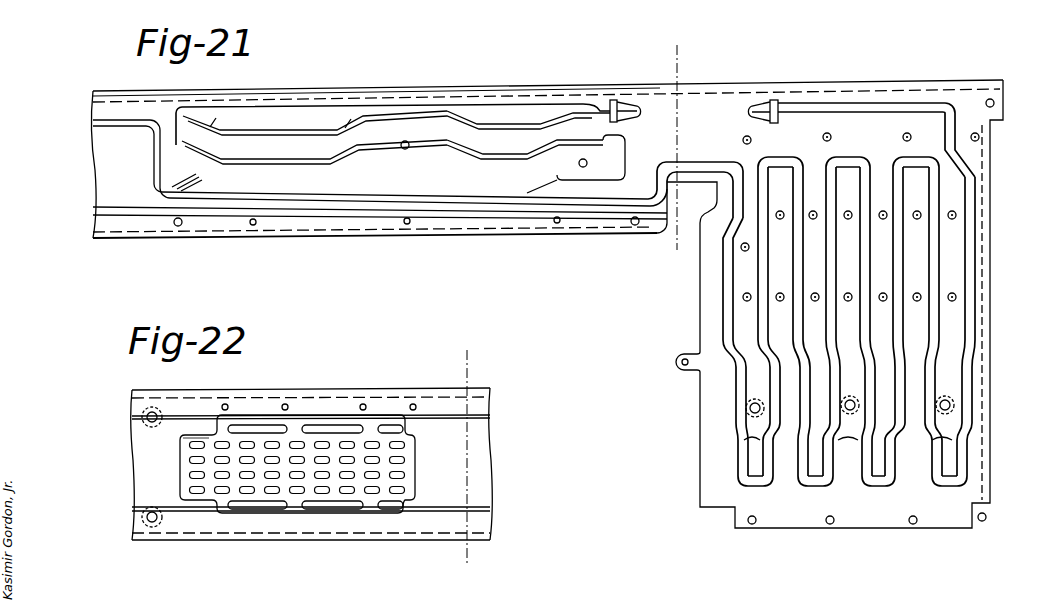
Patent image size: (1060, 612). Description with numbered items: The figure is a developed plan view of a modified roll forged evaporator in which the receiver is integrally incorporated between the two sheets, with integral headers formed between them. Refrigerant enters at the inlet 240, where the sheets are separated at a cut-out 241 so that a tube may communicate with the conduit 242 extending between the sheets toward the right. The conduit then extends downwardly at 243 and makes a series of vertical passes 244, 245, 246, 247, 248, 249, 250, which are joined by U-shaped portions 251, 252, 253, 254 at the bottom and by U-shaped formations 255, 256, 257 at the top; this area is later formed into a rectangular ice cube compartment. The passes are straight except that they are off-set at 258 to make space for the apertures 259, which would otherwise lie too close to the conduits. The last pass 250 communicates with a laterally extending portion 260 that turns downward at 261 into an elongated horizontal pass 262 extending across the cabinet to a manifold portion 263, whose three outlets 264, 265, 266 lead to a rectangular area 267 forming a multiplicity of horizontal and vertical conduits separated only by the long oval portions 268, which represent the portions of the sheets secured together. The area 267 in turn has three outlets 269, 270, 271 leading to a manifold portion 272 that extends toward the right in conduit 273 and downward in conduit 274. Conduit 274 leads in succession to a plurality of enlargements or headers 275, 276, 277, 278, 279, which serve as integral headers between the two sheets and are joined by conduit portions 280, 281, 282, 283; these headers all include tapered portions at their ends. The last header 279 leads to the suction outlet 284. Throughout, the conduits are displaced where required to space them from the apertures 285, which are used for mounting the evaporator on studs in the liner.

In FIG. 21, the inlet 240 is at (750, 112).
In FIG. 21, the cut-out 241 is at (773, 100).
In FIG. 21, the conduit 242 is at (862, 103).
In FIG. 21, the downward conduit extension 243 is at (972, 254).
In FIG. 21, the vertical pass 244 is at (938, 268).
In FIG. 21, the vertical pass 245 is at (903, 266).
In FIG. 21, the vertical pass 246 is at (866, 272).
In FIG. 21, the vertical pass 247 is at (832, 270).
In FIG. 21, the vertical pass 248 is at (800, 286).
In FIG. 21, the vertical pass 249 is at (770, 317).
In FIG. 21, the last vertical pass 250 is at (722, 268).
In FIG. 21, the U-shaped portion 251 is at (935, 488).
In FIG. 21, the U-shaped portion 252 is at (866, 488).
In FIG. 21, the U-shaped portion 253 is at (806, 488).
In FIG. 21, the U-shaped portion 254 is at (748, 488).
In FIG. 21, the U-shaped formation 255 is at (917, 160).
In FIG. 21, the U-shaped formation 256 is at (840, 160).
In FIG. 21, the U-shaped formation 257 is at (775, 160).
In FIG. 21, the off-set 258 is at (776, 432).
In FIG. 21, the aperture 259 is at (760, 393).
In FIG. 21, the laterally extending portion 260 is at (683, 162).
In FIG. 21, the downward turn 261 is at (660, 178).
In FIG. 21, the elongated horizontal pass 262 is at (580, 210).
In FIG. 22, the manifold portion 263 is at (345, 514).
In FIG. 22, the outlet 264 is at (220, 511).
In FIG. 22, the outlet 265 is at (291, 511).
In FIG. 22, the outlet 266 is at (375, 505).
In FIG. 22, the rectangular area 267 is at (412, 465).
In FIG. 22, the long oval portion 268 is at (190, 474).
In FIG. 22, the outlet 269 is at (218, 426).
In FIG. 22, the outlet 270 is at (291, 425).
In FIG. 22, the outlet 271 is at (375, 424).
In FIG. 22, the manifold portion 272 is at (332, 421).
In FIG. 21, the conduit 273 is at (98, 123).
In FIG. 22, the conduit 273 is at (480, 418).
In FIG. 21, the conduit 274 is at (155, 173).
In FIG. 21, the header 275 is at (223, 185).
In FIG. 21, the header 276 is at (530, 148).
In FIG. 21, the header 277 is at (357, 131).
In FIG. 21, the header 278 is at (338, 80).
In FIG. 21, the last header 279 is at (518, 112).
In FIG. 21, the conduit portion 280 is at (620, 146).
In FIG. 21, the conduit portion 281 is at (415, 162).
In FIG. 21, the conduit portion 282 is at (168, 118).
In FIG. 21, the conduit portion 283 is at (403, 110).
In FIG. 21, the suction outlet 284 is at (606, 100).
In FIG. 21, the aperture 285 is at (407, 142).